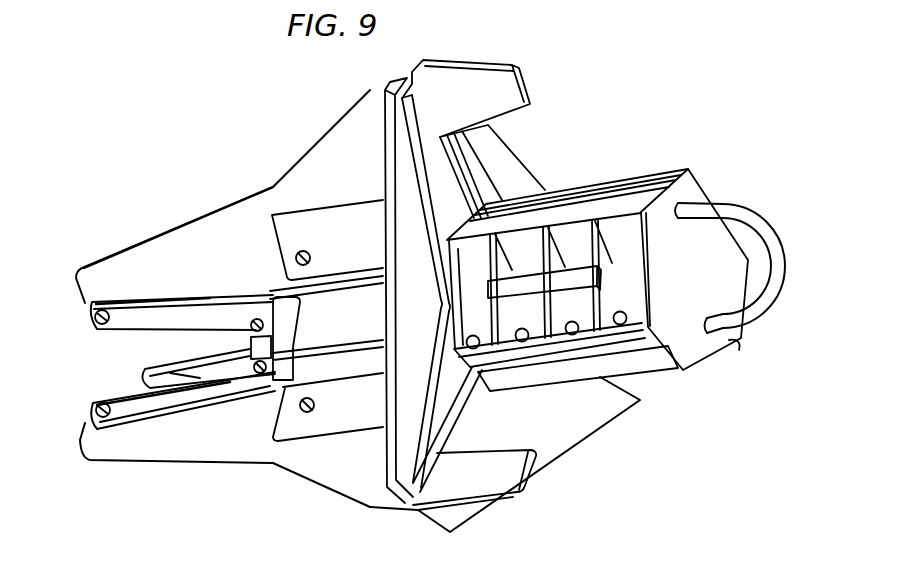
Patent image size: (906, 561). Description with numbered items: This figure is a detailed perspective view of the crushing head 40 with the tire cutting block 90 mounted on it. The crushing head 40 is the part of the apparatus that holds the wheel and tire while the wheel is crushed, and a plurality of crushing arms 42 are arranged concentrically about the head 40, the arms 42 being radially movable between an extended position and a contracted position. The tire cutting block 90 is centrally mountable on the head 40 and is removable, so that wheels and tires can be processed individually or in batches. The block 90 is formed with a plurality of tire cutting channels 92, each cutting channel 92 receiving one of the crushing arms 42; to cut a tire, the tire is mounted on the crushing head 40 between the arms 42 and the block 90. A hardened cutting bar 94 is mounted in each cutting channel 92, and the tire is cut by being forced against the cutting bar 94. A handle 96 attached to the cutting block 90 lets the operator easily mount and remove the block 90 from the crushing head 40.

The crushing head 40 is at (512, 177).
The crushing arms 42 is at (517, 94).
The tire cutting block 90 is at (655, 173).
The tire cutting channels 92 is at (640, 350).
The hardened cutting bar 94 is at (583, 353).
The handle 96 is at (777, 243).